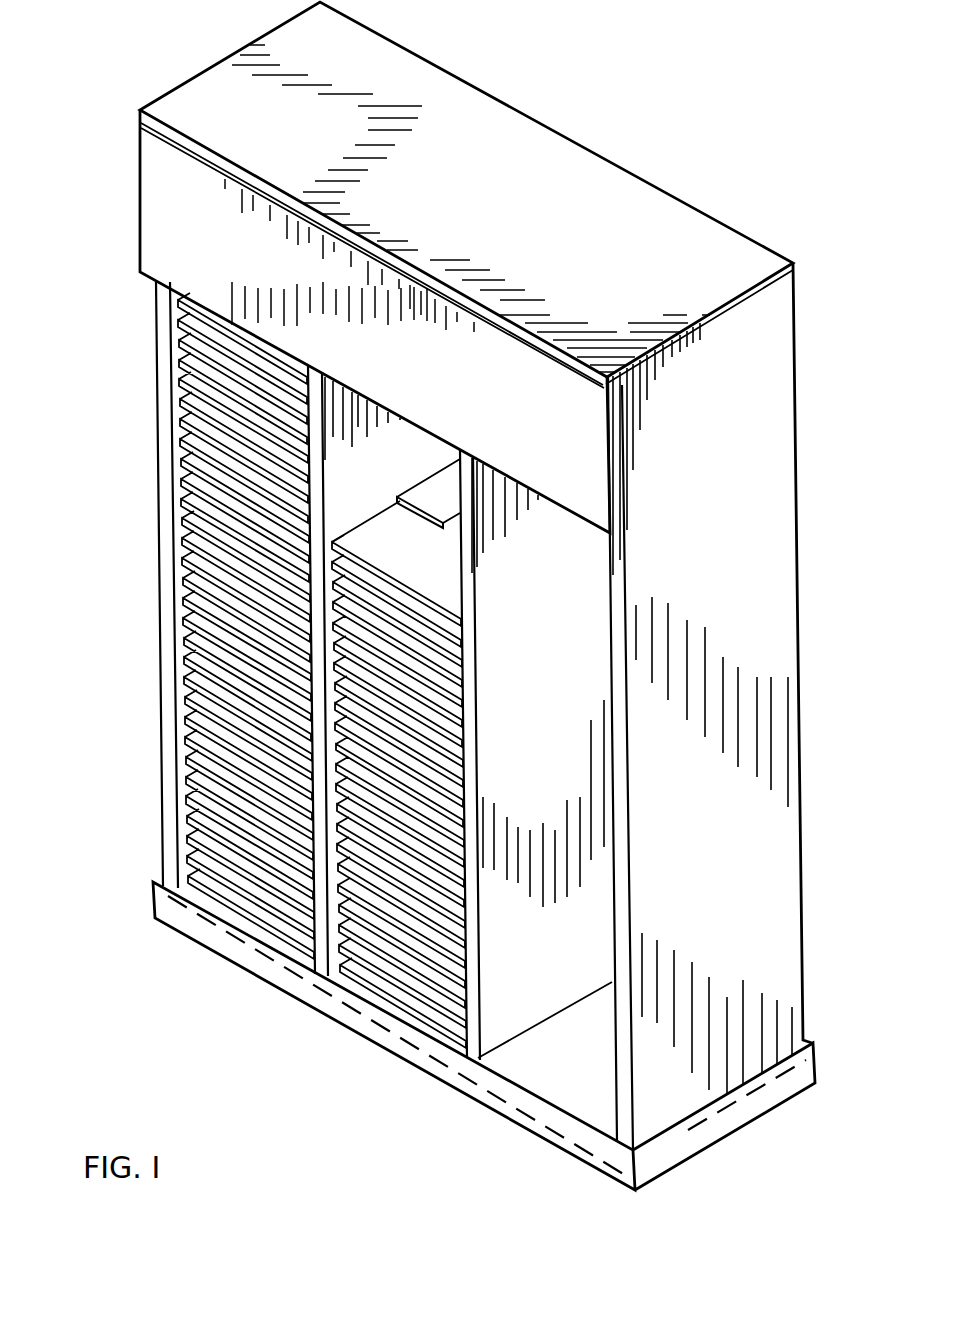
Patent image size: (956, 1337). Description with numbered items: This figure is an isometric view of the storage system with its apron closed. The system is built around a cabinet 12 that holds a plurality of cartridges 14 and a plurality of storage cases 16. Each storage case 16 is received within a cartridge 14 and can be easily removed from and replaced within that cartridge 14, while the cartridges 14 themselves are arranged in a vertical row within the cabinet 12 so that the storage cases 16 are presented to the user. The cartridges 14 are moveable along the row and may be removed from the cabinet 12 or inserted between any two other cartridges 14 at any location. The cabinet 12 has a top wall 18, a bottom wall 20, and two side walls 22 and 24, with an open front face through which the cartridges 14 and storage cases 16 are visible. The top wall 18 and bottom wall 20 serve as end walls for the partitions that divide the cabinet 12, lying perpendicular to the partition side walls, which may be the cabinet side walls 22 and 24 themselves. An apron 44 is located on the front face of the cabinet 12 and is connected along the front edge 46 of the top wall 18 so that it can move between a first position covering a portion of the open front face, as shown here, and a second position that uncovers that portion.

The cabinet 12 is at (125, 389).
The cartridge 14 is at (425, 492).
The storage case 16 is at (206, 680).
The top wall 18 is at (490, 133).
The bottom wall 20 is at (521, 1068).
The side wall 22 is at (158, 572).
The side wall 24 is at (745, 507).
The apron 44 is at (170, 222).
The front edge 46 is at (141, 123).